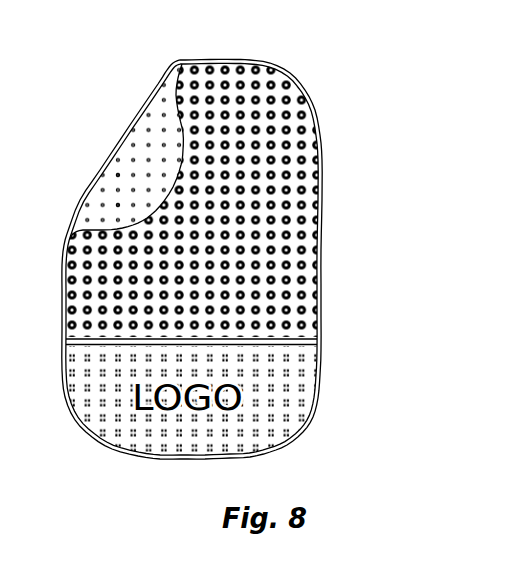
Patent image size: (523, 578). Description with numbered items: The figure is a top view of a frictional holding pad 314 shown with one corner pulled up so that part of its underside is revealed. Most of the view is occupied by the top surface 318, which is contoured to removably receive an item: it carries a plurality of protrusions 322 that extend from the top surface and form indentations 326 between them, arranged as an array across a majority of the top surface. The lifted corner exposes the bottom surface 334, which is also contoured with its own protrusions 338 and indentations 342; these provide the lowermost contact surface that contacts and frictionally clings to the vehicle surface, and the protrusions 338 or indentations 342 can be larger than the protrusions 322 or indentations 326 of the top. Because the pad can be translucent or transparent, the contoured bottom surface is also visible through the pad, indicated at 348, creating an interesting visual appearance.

The frictional holding pad 314 is at (106, 486).
The top surface 318 is at (294, 237).
The protrusions 322 is at (228, 86).
The indentations 326 is at (284, 102).
The bottom surface 334 is at (143, 127).
The protrusions 338 is at (112, 202).
The indentations 342 is at (117, 173).
The visible contoured bottom surface 348 is at (315, 413).